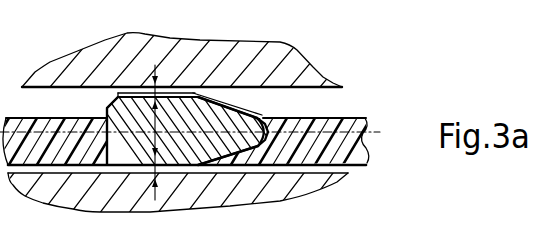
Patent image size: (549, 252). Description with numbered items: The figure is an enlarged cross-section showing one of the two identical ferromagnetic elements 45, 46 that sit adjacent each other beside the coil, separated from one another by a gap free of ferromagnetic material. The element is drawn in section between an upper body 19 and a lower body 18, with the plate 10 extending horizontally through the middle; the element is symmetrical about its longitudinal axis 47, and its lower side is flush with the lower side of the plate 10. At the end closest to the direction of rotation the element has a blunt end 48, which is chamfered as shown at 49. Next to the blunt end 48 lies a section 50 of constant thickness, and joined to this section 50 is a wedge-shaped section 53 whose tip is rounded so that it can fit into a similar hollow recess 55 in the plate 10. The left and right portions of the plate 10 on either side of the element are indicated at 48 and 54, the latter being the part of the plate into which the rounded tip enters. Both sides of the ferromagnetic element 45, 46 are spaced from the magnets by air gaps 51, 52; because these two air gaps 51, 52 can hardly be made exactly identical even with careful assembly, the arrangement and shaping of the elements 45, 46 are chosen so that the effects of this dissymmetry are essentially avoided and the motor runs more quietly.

The plate 10 is at (200, 139).
The lower housing body 18 is at (62, 192).
The upper housing body 19 is at (287, 72).
The ferromagnetic element 45 is at (185, 124).
The ferromagnetic element 46 is at (199, 85).
The longitudinal axis 47 is at (238, 126).
The blunt end 48 is at (100, 135).
The chamfer 49 is at (107, 108).
The section of constant thickness 50 is at (187, 94).
The air gap 51 is at (138, 92).
The air gap 52 is at (148, 177).
The wedge-shaped section 53 is at (240, 121).
The right beam section 54 is at (335, 116).
The hollow recess 55 is at (254, 143).